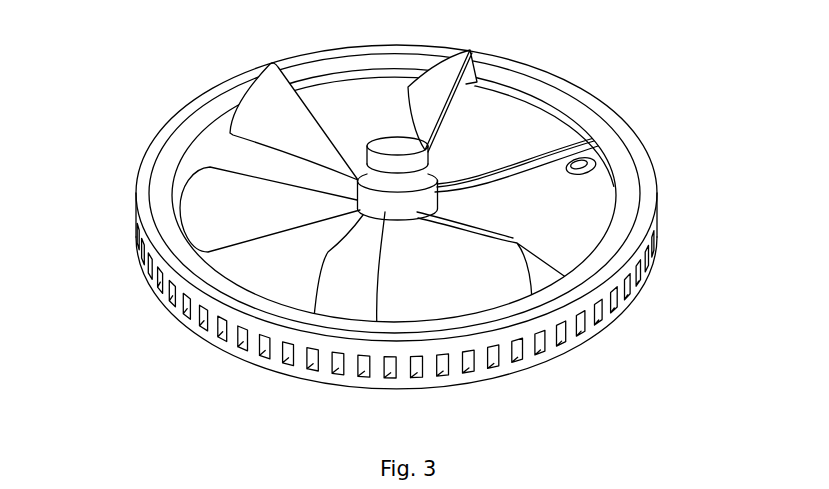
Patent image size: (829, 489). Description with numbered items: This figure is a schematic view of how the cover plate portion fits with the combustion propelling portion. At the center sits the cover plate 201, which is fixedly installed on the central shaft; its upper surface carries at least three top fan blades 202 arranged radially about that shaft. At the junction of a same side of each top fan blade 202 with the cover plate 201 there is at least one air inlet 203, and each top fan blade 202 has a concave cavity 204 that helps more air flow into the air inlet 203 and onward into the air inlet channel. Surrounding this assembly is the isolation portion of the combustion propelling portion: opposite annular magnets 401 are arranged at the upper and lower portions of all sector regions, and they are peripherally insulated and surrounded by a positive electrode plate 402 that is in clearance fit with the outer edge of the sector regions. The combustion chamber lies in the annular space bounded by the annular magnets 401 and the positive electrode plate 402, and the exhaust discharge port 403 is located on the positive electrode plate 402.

The cover plate 201 is at (538, 125).
The top fan blade 202 is at (592, 143).
The air inlet 203 is at (590, 168).
The concave cavity 204 is at (468, 72).
The annular magnet 401 is at (210, 117).
The positive electrode plate 402 is at (142, 172).
The exhaust discharge port 403 is at (142, 268).